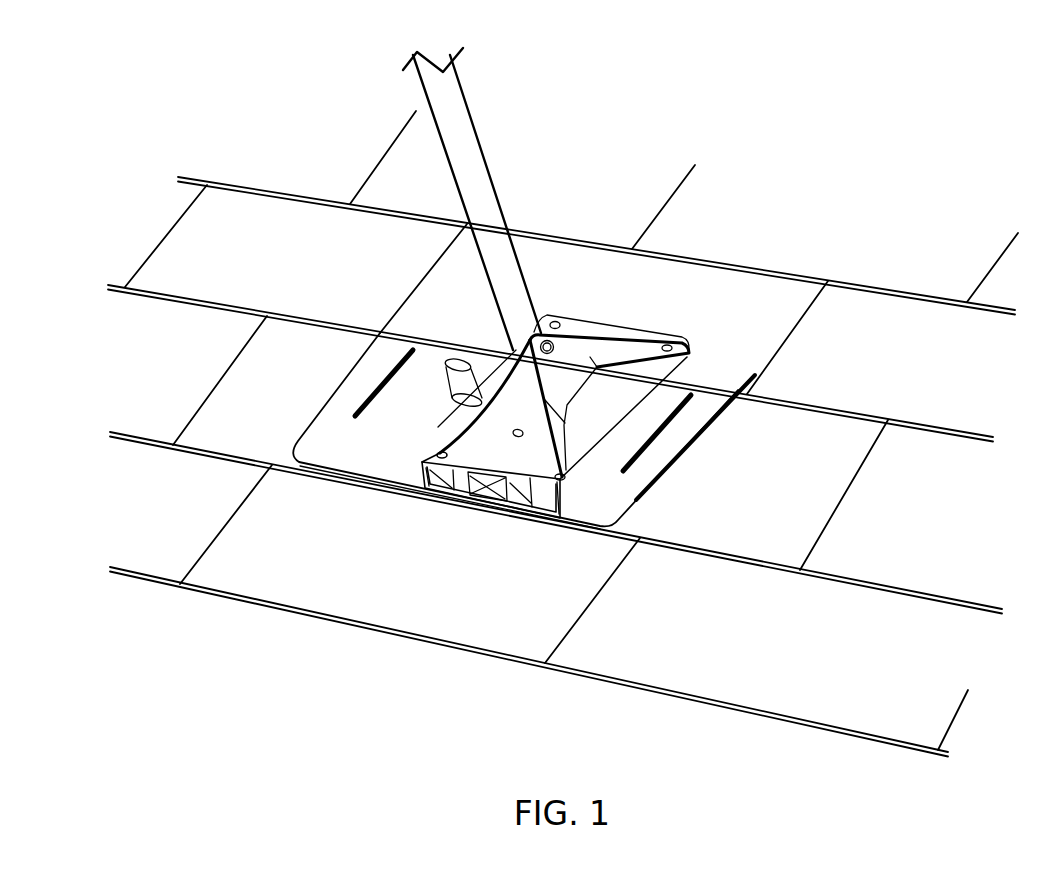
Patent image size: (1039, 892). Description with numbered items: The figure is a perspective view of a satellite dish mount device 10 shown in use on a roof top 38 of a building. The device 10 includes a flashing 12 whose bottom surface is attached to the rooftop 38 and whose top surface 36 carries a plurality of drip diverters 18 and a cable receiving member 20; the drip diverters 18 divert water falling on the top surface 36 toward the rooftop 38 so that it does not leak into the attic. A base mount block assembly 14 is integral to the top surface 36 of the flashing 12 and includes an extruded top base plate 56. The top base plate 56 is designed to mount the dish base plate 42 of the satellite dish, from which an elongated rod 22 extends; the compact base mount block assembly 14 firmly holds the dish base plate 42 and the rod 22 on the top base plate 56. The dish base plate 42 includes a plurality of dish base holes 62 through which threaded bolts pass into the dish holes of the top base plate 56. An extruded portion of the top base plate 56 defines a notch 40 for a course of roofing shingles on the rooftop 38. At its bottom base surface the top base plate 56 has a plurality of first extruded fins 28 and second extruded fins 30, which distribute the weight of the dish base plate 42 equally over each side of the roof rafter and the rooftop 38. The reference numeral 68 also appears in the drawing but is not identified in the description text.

The satellite dish mount device 10 is at (583, 408).
The flashing 12 is at (437, 391).
The base mount block assembly 14 is at (583, 421).
The drip diverters 18 is at (395, 362).
The cable receiving member 20 is at (441, 418).
The elongated rod 22 is at (479, 137).
The first extruded fins 28 is at (448, 499).
The second extruded fins 30 is at (463, 502).
The top surface 36 is at (317, 440).
The roof top 38 is at (863, 307).
The notch 40 is at (583, 423).
The dish base plate 42 is at (560, 363).
The top base plate 56 is at (557, 316).
The dish base holes 62 is at (497, 498).
The aperture 68 is at (513, 433).